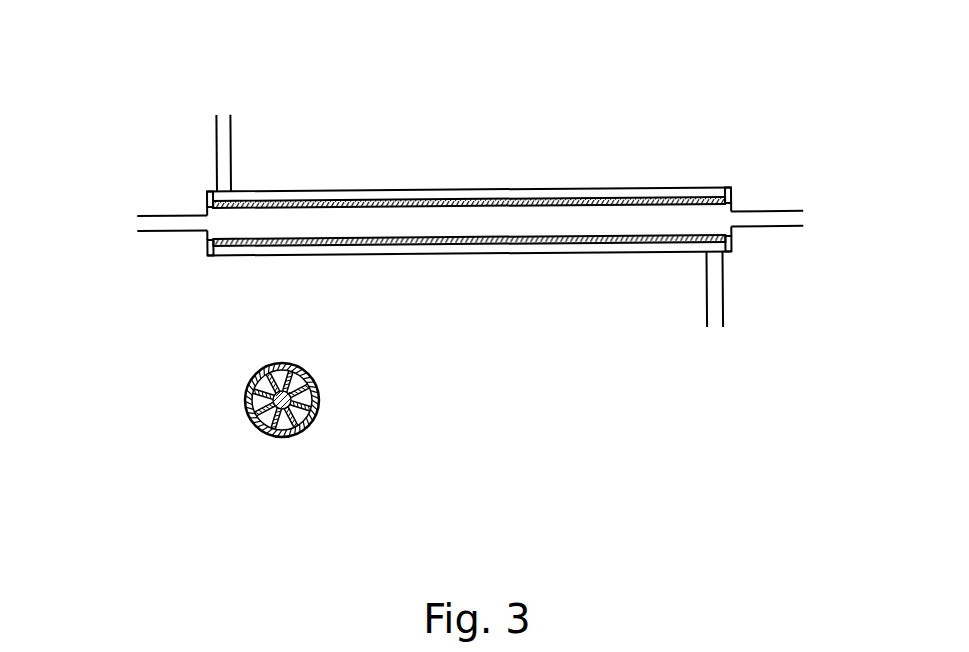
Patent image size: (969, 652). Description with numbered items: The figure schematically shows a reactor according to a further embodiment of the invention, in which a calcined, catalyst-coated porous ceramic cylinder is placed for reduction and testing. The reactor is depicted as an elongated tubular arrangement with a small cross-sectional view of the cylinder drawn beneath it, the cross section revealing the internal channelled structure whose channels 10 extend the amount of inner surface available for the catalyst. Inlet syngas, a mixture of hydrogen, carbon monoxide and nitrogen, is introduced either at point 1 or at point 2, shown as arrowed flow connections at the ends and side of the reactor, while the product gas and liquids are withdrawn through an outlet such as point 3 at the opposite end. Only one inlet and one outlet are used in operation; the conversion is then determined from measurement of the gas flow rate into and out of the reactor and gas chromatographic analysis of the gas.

The inlet point 1 is at (223, 119).
The inlet point 2 is at (133, 223).
The outlet point 3 is at (805, 218).
The channels 10 is at (305, 397).